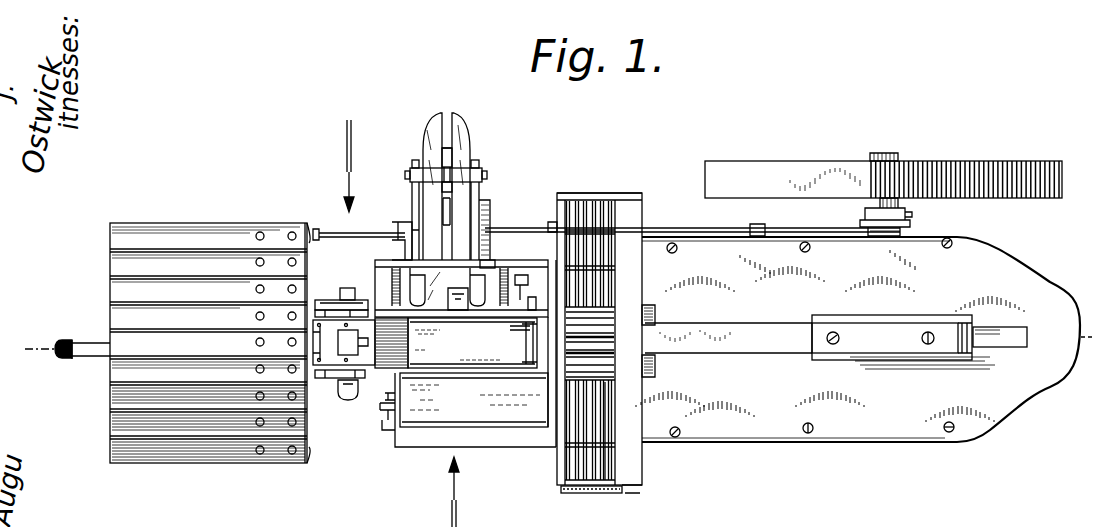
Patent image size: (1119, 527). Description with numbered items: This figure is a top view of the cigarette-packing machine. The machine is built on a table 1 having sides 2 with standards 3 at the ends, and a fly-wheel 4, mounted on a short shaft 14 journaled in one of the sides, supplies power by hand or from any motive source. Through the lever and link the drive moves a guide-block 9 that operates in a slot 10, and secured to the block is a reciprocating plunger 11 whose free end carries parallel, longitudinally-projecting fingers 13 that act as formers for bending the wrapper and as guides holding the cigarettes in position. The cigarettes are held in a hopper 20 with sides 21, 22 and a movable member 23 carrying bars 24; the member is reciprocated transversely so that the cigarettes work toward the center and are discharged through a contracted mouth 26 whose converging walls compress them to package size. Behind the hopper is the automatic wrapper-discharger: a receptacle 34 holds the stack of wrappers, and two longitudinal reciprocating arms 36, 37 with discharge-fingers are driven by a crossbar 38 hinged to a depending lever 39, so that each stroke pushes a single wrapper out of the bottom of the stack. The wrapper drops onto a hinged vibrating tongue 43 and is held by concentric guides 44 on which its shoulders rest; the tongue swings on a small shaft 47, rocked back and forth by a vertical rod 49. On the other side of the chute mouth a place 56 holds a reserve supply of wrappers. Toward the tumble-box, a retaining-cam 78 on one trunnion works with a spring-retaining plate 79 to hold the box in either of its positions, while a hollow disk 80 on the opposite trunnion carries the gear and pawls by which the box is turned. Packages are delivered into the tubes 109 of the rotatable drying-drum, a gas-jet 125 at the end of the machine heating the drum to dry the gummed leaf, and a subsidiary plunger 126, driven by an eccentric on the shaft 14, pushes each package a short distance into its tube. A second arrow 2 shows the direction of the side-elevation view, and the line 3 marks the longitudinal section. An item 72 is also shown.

The table 1 is at (858, 339).
The sides 2 is at (461, 492).
The standards 3 is at (556, 344).
The fly-wheel 4 is at (963, 163).
The guide-block 9 is at (889, 313).
The slot 10 is at (1000, 337).
The reciprocating plunger 11 is at (746, 351).
The fingers 13 is at (340, 166).
The short shaft 14 is at (906, 205).
The hopper 20 is at (601, 339).
The side of hopper 21 is at (620, 200).
The side of hopper 22 is at (636, 489).
The movable member 23 is at (572, 493).
The bars 24 is at (612, 462).
The contracted mouth 26 is at (548, 373).
The receptacle 34 is at (497, 275).
The reciprocating arm 36 is at (485, 196).
The reciprocating arm 37 is at (414, 198).
The crossbar 38 is at (478, 171).
The depending lever 39 is at (447, 215).
The hinged vibrating tongue 43 is at (456, 343).
The concentric guides 44 is at (520, 328).
The small shaft 47 is at (527, 345).
The vertical rod 49 is at (516, 290).
The place for reserve wrappers 56 is at (474, 400).
The plate 72 is at (336, 358).
The retaining-cam 78 is at (352, 378).
The spring-retaining plate 79 is at (348, 402).
The hollow disk 80 is at (340, 300).
The tubes 109 is at (210, 343).
The gas-jet 125 is at (81, 344).
The subsidiary plunger 126 is at (336, 243).